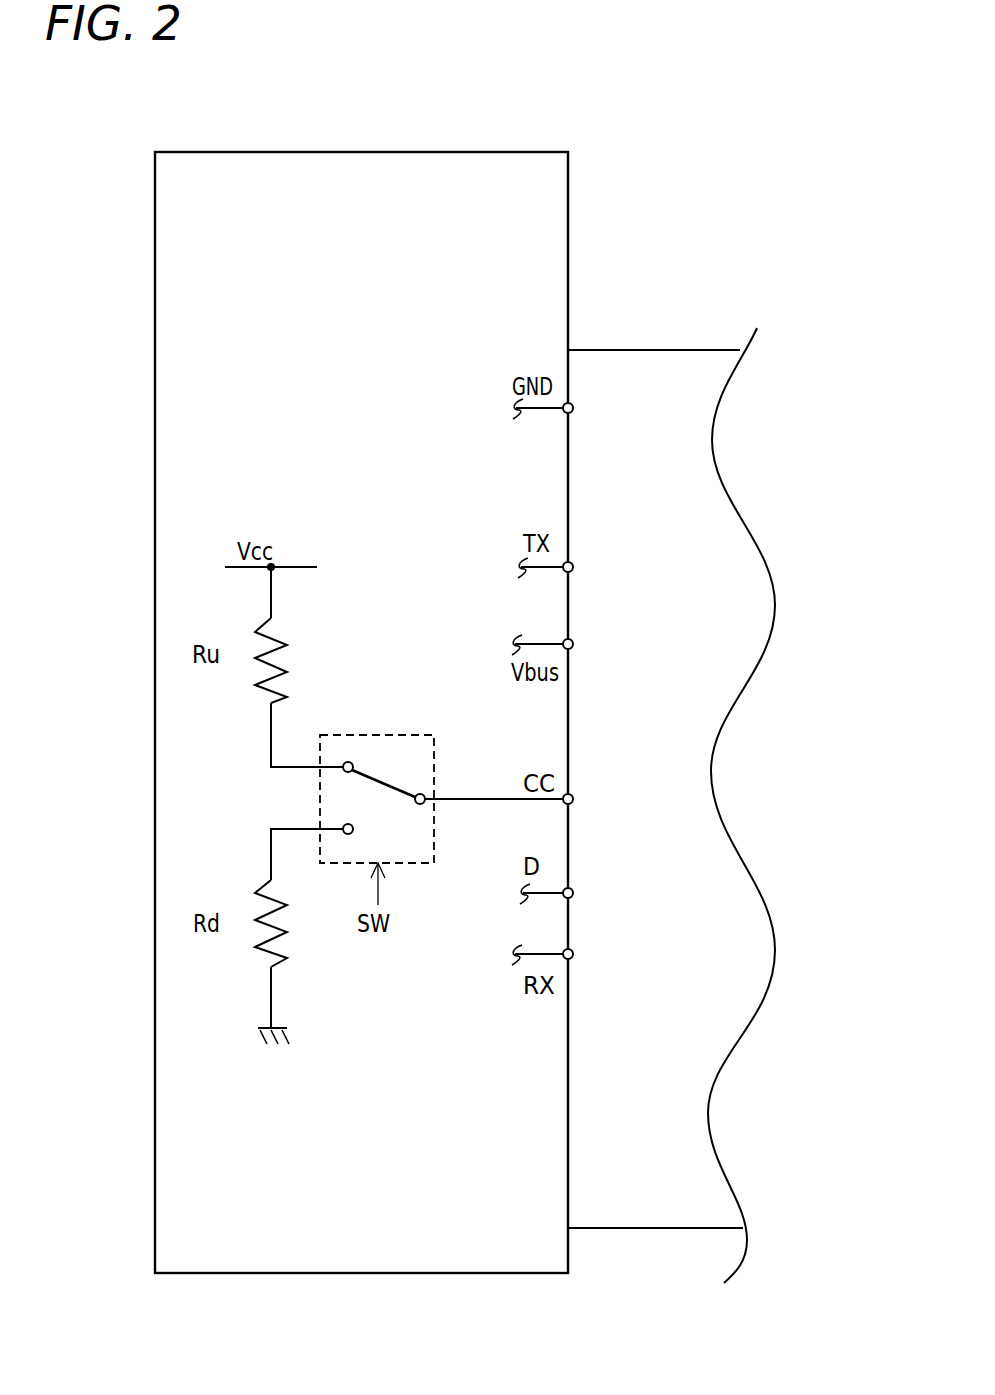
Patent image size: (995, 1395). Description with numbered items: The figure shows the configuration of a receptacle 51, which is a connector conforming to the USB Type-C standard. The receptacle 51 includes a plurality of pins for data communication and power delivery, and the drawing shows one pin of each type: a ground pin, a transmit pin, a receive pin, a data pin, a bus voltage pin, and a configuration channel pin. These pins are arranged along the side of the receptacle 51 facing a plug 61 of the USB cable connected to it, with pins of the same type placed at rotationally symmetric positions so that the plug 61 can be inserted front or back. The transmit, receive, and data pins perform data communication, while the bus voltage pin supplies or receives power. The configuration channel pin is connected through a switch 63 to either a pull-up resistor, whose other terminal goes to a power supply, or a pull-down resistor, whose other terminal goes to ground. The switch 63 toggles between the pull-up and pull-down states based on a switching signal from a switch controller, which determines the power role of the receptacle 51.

The receptacle 51 is at (534, 152).
The plug 61 is at (654, 350).
The switch 63 is at (407, 735).